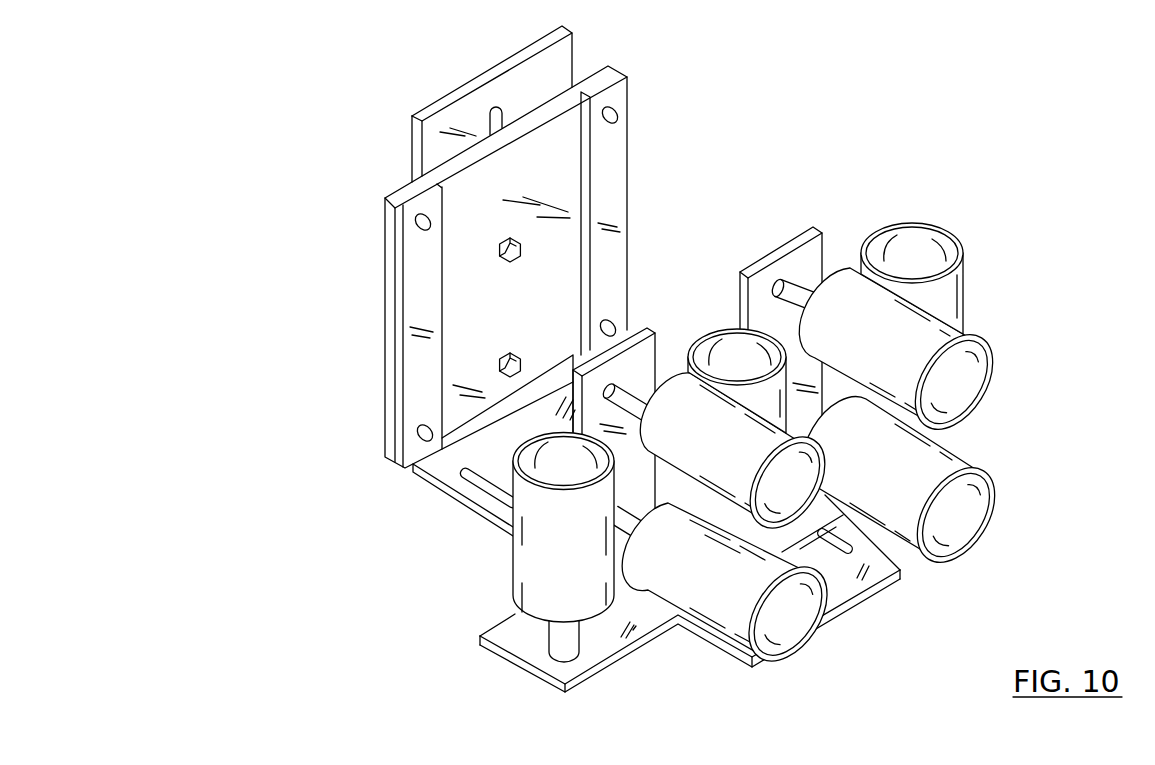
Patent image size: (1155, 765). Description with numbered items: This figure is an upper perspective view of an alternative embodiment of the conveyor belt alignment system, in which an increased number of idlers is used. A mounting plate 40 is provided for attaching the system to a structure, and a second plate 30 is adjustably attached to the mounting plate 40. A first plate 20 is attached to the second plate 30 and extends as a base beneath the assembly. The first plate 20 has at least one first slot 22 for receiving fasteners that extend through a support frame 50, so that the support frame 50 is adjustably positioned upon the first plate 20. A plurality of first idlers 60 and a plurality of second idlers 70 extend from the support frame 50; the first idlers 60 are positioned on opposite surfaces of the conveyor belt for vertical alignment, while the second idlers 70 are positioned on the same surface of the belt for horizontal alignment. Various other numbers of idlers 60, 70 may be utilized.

The first plate 20 is at (413, 478).
The first slot 22 is at (481, 477).
The second plate 30 is at (430, 113).
The mounting plate 40 is at (386, 290).
The support frame 50 is at (642, 335).
The first idlers 60 is at (992, 355).
The second idlers 70 is at (513, 568).